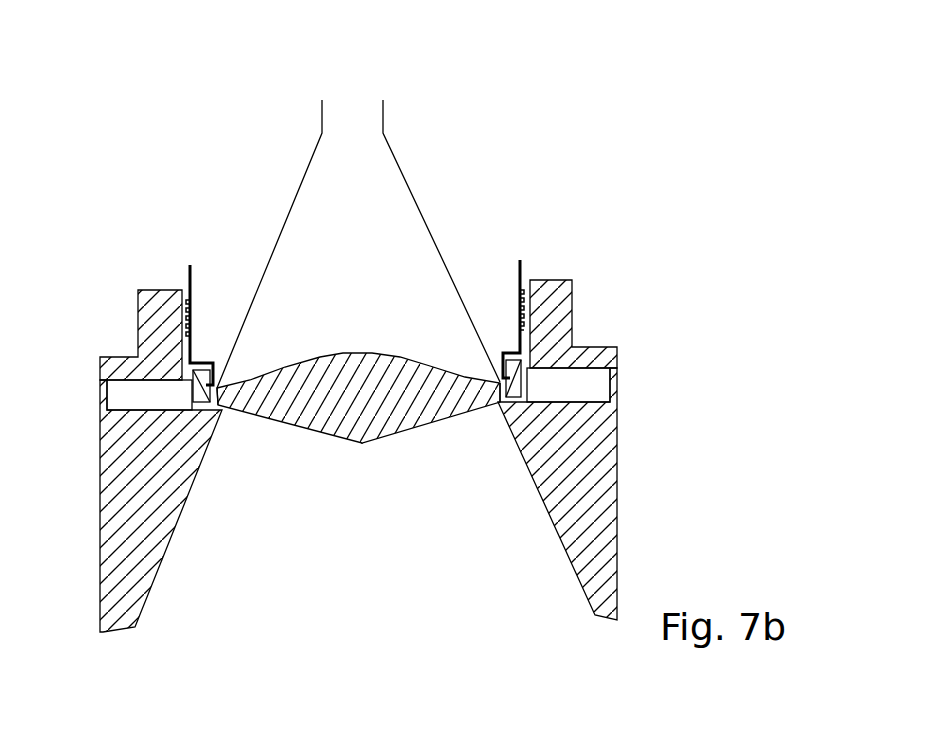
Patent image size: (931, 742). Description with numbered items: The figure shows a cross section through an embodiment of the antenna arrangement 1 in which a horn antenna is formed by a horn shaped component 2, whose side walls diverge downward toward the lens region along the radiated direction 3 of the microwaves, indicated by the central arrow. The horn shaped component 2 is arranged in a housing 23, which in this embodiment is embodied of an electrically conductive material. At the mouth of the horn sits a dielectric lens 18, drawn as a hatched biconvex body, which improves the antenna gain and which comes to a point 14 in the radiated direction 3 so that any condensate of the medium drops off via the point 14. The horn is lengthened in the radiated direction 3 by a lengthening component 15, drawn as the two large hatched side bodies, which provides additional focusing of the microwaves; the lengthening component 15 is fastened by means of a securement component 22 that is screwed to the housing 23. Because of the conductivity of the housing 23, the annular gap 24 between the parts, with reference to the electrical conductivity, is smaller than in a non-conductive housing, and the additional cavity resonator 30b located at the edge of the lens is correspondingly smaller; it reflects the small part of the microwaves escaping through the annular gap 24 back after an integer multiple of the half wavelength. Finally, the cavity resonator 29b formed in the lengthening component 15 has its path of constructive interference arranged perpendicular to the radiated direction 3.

The antenna arrangement 1 is at (426, 132).
The horn shaped component 2 is at (408, 185).
The radiated direction 3 is at (352, 255).
The point 14 is at (365, 462).
The lengthening component 15 is at (168, 547).
The dielectric lens 18 is at (327, 357).
The securement component 22 is at (157, 333).
The housing 23 is at (192, 278).
The annular gap 24 is at (228, 411).
The cavity resonator 29b is at (133, 413).
The additional cavity resonator 30b is at (213, 370).